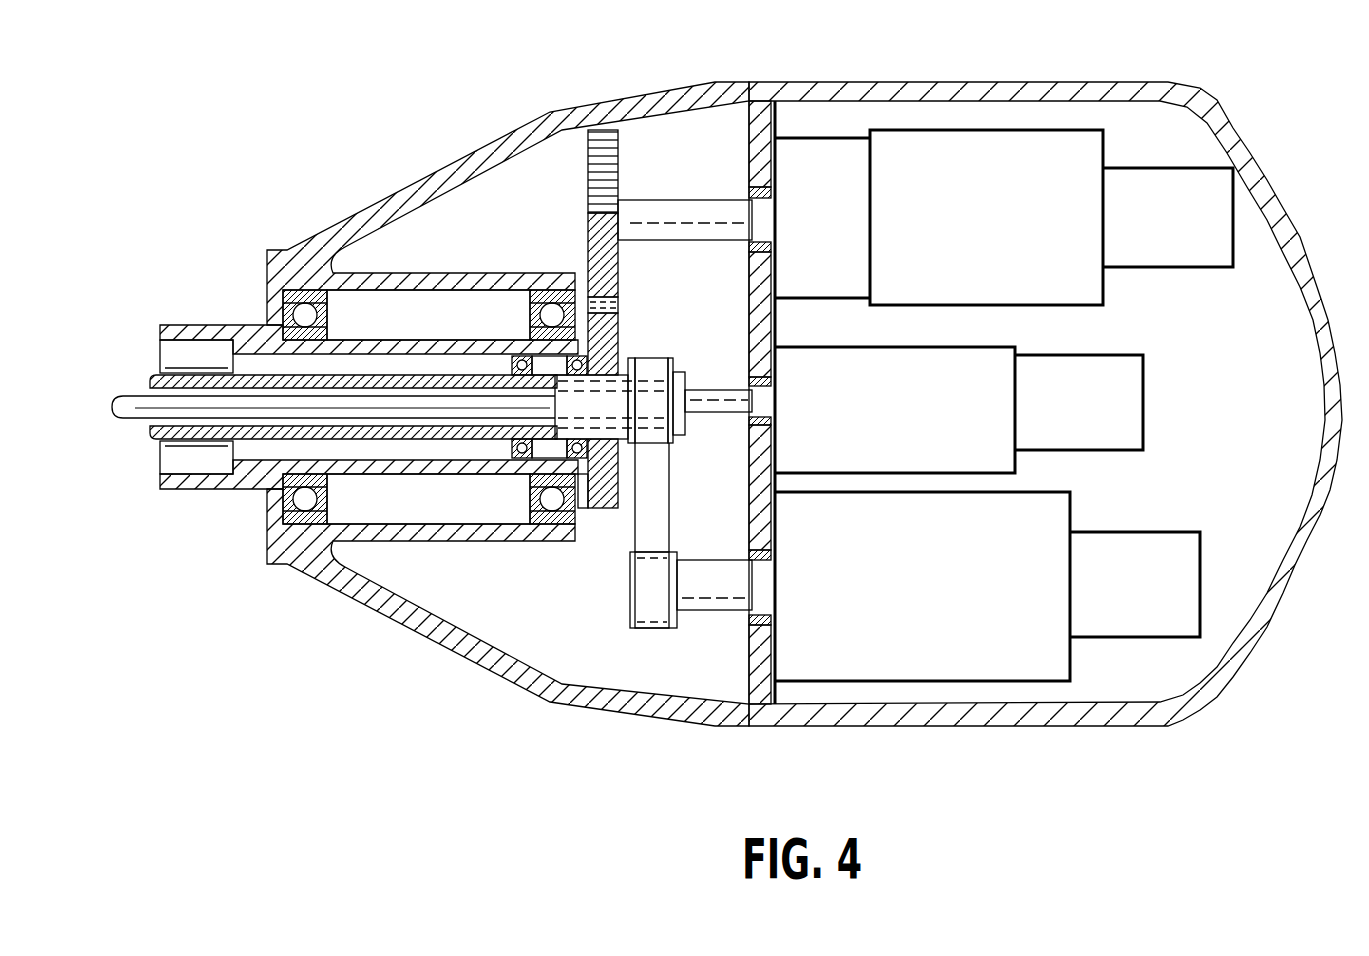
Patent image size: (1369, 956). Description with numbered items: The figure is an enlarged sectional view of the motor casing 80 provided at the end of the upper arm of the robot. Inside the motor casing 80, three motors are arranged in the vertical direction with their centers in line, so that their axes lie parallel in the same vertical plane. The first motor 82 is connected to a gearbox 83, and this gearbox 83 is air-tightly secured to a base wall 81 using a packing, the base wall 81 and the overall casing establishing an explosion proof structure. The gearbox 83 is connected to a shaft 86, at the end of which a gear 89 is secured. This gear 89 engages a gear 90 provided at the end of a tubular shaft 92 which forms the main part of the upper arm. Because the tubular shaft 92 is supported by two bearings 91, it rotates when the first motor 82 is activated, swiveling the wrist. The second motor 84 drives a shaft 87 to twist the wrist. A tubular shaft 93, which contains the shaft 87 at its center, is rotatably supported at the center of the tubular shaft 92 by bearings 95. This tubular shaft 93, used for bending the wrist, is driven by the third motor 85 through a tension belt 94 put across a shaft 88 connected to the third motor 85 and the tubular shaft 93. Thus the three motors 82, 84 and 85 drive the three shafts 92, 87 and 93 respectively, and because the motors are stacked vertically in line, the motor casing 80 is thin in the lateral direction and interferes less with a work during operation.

The motor casing 80 is at (935, 85).
The base wall 81 is at (749, 152).
The first motor 82 is at (1047, 132).
The gearbox 83 is at (825, 138).
The second motor 84 is at (1000, 345).
The third motor 85 is at (1053, 519).
The shaft 86 is at (672, 240).
The shaft 87 is at (713, 414).
The shaft 88 is at (715, 612).
The gear 89 is at (585, 178).
The gear 90 is at (602, 510).
The bearings 91 is at (329, 318).
The tubular shaft 92 is at (223, 489).
The tubular shaft 93 is at (624, 372).
The tension belt 94 is at (628, 598).
The bearings 95 is at (509, 458).